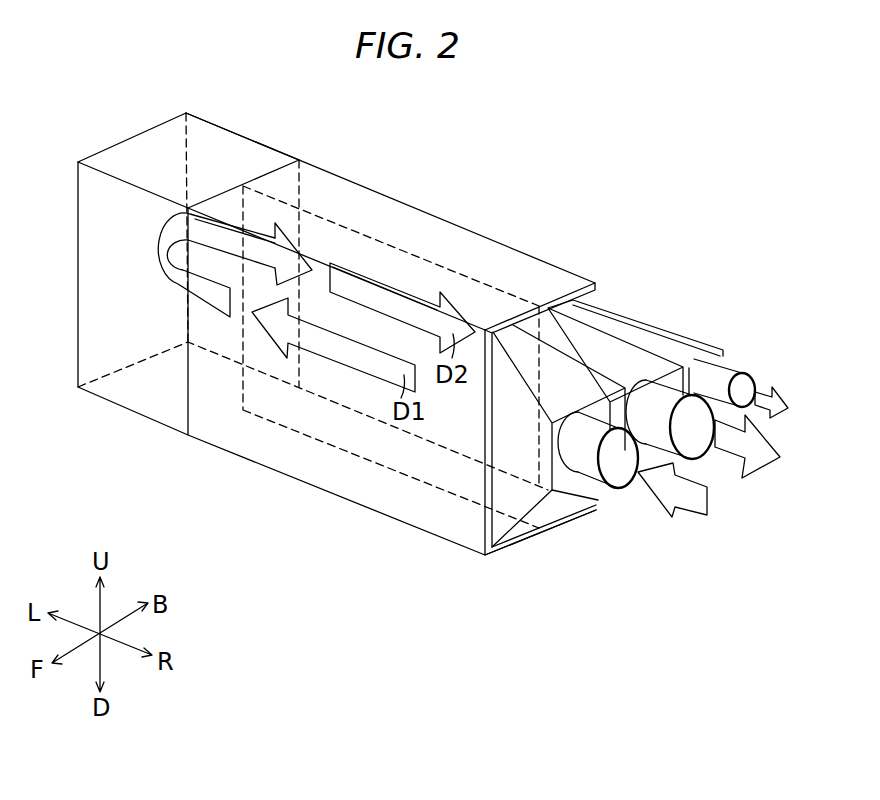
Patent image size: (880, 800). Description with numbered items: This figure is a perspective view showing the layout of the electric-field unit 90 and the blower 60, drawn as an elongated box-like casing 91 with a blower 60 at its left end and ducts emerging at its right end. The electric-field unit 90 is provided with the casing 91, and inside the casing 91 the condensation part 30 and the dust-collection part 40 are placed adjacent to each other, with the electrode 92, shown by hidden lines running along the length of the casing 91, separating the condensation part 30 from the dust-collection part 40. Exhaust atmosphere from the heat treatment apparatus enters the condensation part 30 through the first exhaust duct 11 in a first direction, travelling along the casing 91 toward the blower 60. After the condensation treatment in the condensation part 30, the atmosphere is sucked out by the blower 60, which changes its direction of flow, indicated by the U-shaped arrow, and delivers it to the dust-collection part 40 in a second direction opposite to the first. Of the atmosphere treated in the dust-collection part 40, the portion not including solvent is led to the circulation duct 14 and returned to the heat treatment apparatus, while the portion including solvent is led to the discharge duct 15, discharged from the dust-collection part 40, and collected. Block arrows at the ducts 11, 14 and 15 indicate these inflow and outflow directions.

The first exhaust duct 11 is at (688, 495).
The circulation duct 14 is at (753, 463).
The discharge duct 15 is at (776, 390).
The condensation part 30 is at (235, 445).
The dust-collection part 40 is at (356, 190).
The blower 60 is at (233, 132).
The electric-field unit 90 is at (420, 336).
The casing 91 is at (445, 219).
The electrode 92 is at (420, 257).